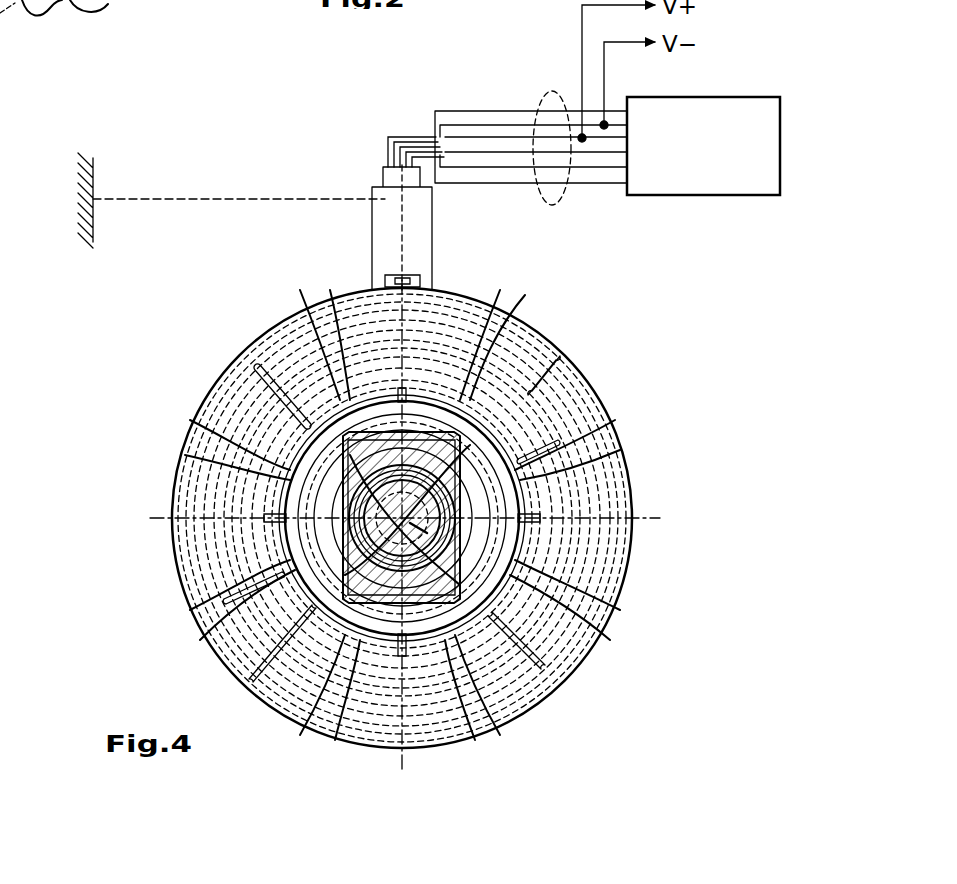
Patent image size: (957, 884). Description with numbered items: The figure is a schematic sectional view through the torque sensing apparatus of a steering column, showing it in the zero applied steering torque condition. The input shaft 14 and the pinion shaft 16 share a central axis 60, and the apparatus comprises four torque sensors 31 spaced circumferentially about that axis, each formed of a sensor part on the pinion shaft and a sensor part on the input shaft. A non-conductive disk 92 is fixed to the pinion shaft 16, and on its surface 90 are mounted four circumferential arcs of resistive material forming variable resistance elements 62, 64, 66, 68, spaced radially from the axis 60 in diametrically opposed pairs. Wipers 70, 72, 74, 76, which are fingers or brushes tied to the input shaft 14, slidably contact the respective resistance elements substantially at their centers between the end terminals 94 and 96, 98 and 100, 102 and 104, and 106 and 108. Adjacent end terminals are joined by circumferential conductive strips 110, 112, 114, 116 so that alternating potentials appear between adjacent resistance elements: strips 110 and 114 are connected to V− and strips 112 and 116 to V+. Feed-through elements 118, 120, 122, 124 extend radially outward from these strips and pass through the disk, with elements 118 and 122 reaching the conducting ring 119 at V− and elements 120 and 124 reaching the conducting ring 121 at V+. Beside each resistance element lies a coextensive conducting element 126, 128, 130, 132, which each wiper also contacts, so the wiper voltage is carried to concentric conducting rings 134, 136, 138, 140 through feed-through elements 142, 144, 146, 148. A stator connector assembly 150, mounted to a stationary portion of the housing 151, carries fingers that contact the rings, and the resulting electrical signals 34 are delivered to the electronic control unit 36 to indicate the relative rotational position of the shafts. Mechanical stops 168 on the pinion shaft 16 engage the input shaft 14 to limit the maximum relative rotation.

The input shaft 14 is at (413, 470).
The pinion shaft 16 is at (333, 470).
The torque sensor 31 is at (548, 523).
The electrical signals 34 is at (560, 200).
The electronic control unit 36 is at (780, 127).
The central axis 60 is at (430, 530).
The variable resistance element 62 is at (455, 298).
The variable resistance element 64 is at (513, 503).
The variable resistance element 66 is at (523, 637).
The variable resistance element 68 is at (278, 495).
The wiper 70 is at (350, 400).
The wiper 72 is at (537, 512).
The wiper 74 is at (475, 735).
The wiper 76 is at (265, 516).
The surface of disk 90 is at (385, 745).
The disk 92 is at (442, 757).
The end terminal 94 is at (305, 330).
The end terminal 96 is at (520, 420).
The end terminal 98 is at (505, 455).
The end terminal 100 is at (605, 633).
The end terminal 102 is at (535, 705).
The end terminal 104 is at (300, 680).
The end terminal 106 is at (270, 585).
The end terminal 108 is at (295, 475).
The conductive strip 110 is at (490, 440).
The conductive strip 112 is at (550, 690).
The conductive strip 114 is at (305, 600).
The conductive strip 116 is at (305, 455).
The feed-through element 118 is at (535, 400).
The conducting ring 119 is at (630, 520).
The feed-through element 120 is at (547, 665).
The conducting ring 121 is at (628, 563).
The feed-through element 122 is at (243, 673).
The feed-through element 124 is at (258, 368).
The conducting element 126 is at (505, 320).
The conducting element 128 is at (530, 478).
The conducting element 130 is at (380, 652).
The conducting element 132 is at (270, 540).
The conducting ring 134 is at (605, 625).
The conducting ring 136 is at (617, 600).
The conducting ring 138 is at (613, 623).
The conducting ring 140 is at (623, 587).
The feed-through element 142 is at (480, 338).
The feed-through element 144 is at (520, 463).
The feed-through element 146 is at (300, 697).
The feed-through element 148 is at (245, 585).
The stator connector assembly 150 is at (372, 187).
The housing 151 is at (93, 212).
The mechanical stops 168 is at (340, 548).